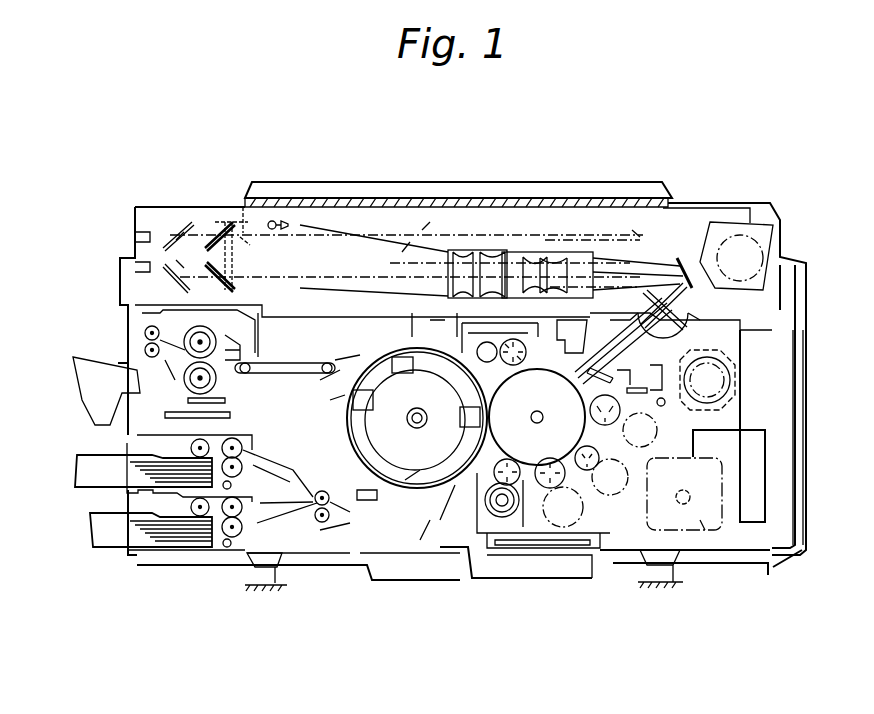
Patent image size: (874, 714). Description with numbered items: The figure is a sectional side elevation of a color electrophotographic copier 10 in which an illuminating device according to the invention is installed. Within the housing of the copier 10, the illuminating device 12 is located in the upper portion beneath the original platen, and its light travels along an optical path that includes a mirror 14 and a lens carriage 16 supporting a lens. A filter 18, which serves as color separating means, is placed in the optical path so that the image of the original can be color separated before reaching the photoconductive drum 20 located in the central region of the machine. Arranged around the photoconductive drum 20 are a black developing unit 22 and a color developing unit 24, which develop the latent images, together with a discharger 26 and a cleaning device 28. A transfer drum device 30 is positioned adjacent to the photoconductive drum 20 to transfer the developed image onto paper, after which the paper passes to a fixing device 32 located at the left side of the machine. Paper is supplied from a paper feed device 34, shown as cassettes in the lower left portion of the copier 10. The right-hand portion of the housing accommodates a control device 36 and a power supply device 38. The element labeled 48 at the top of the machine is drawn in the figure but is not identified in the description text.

The copying apparatus 10 is at (768, 145).
The exposure lamp 12 is at (296, 223).
The first mirror 14 is at (218, 217).
The lens unit 16 is at (467, 243).
The mirror assembly 18 is at (684, 307).
The photosensitive drum 20 is at (560, 440).
The developing roller 22 is at (718, 342).
The cleaning unit 24 is at (528, 513).
The exposure beam 26 is at (597, 334).
The charger 28 is at (512, 313).
The transfer drum 30 is at (447, 487).
The discharge tray 32 is at (136, 350).
The paper cassettes 34 is at (120, 555).
The side panel 36 is at (783, 455).
The power unit 38 is at (698, 525).
The platen glass 48 is at (428, 205).